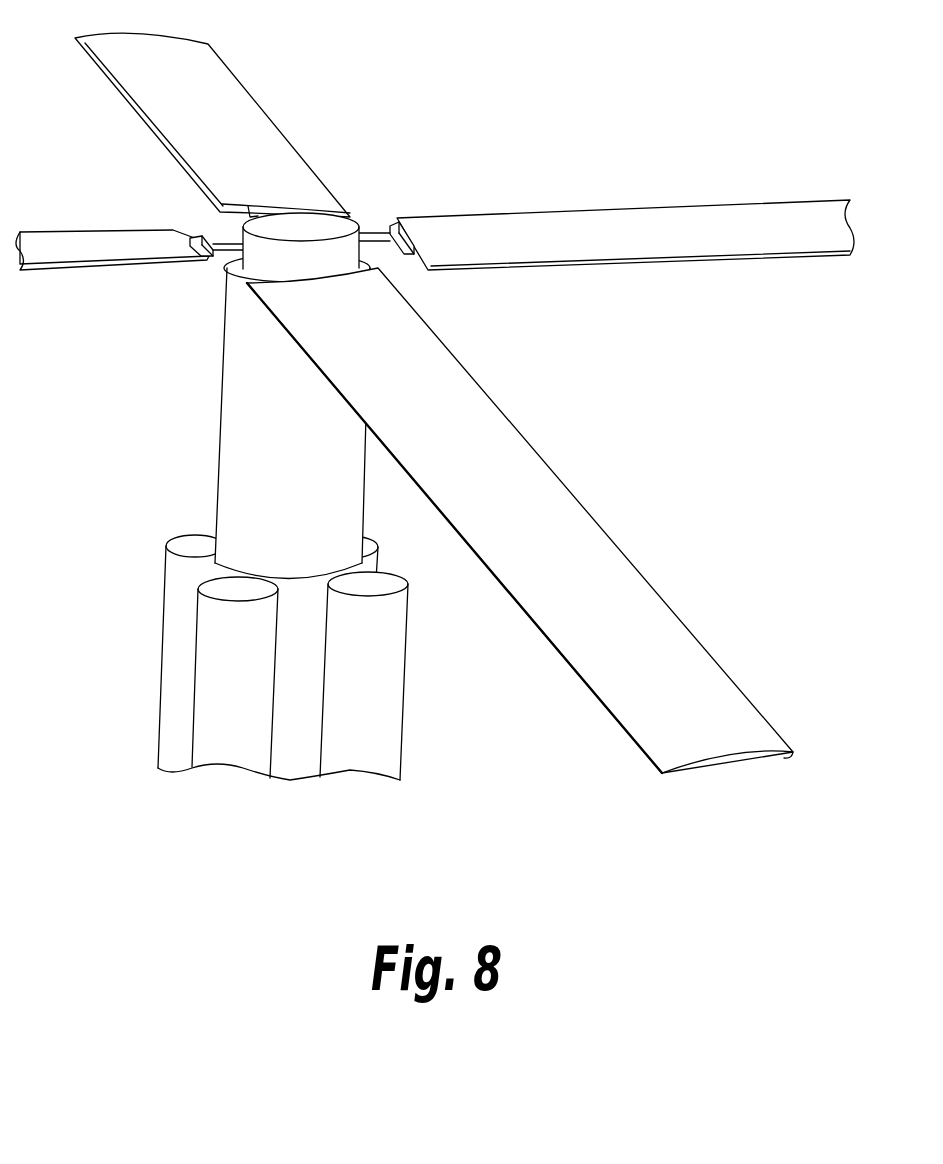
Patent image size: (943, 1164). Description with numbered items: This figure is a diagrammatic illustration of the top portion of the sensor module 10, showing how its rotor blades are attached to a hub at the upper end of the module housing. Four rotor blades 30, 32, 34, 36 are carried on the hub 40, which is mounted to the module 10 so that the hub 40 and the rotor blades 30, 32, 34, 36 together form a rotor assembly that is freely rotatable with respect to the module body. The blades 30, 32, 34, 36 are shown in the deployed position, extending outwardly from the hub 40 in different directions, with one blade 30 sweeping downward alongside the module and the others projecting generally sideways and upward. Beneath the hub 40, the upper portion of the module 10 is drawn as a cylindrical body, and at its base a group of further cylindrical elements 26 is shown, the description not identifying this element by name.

The sensor module 10 is at (435, 407).
The support columns 26 is at (383, 697).
The rotor blade 30 is at (633, 600).
The rotor blade 32 is at (590, 222).
The rotor blade 34 is at (230, 108).
The rotor blade 36 is at (118, 240).
The hub 40 is at (308, 225).